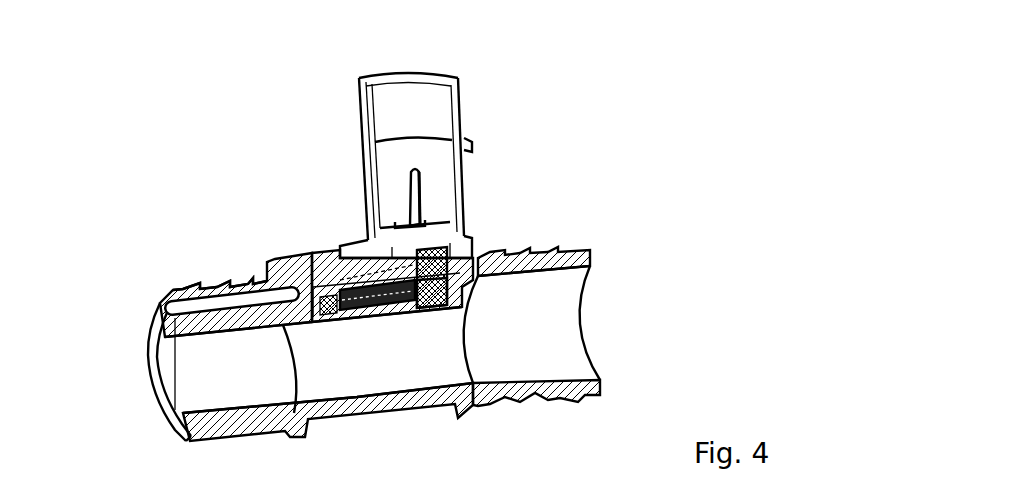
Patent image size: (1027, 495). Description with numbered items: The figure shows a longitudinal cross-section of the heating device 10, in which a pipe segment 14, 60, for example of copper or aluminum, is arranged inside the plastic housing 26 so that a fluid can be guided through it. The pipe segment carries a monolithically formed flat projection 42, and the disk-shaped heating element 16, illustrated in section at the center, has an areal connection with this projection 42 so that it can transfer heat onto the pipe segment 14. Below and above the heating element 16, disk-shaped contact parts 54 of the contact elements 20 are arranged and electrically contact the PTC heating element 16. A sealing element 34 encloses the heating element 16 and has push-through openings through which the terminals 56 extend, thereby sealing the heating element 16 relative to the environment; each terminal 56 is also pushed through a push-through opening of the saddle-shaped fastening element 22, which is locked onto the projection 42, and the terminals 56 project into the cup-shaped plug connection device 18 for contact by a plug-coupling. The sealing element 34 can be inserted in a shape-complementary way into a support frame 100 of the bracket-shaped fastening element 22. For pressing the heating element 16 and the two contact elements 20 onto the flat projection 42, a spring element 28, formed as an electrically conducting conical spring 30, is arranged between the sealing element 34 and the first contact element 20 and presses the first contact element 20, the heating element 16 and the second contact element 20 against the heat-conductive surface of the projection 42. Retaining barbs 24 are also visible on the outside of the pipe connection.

The heating device 10 is at (397, 245).
The pipe segment 14 is at (332, 325).
The heating element 16 is at (412, 307).
The plug connection device 18 is at (443, 165).
The contact element 20 is at (461, 188).
The fastening element 22 is at (465, 288).
The retaining barbs 24 is at (172, 268).
The plastic housing 26 is at (248, 272).
The spring element 28 is at (383, 284).
The conical spring 30 is at (383, 284).
The sealing element 34 is at (467, 257).
The flat projection 42 is at (448, 308).
The contact part 54 is at (372, 308).
The terminal 56 is at (427, 198).
The pipe segment 60 is at (332, 325).
The support frame 100 is at (323, 330).